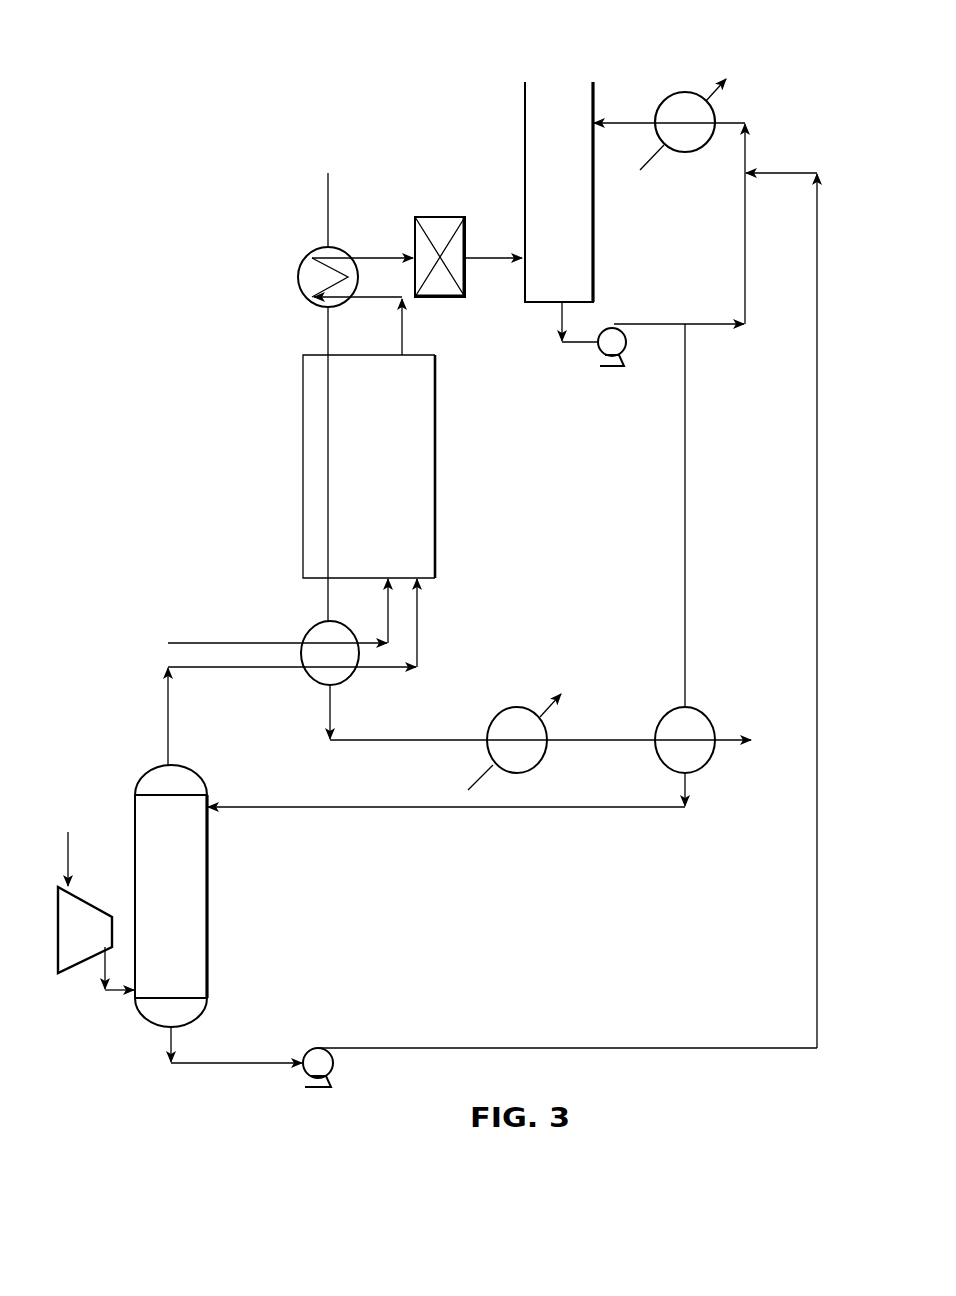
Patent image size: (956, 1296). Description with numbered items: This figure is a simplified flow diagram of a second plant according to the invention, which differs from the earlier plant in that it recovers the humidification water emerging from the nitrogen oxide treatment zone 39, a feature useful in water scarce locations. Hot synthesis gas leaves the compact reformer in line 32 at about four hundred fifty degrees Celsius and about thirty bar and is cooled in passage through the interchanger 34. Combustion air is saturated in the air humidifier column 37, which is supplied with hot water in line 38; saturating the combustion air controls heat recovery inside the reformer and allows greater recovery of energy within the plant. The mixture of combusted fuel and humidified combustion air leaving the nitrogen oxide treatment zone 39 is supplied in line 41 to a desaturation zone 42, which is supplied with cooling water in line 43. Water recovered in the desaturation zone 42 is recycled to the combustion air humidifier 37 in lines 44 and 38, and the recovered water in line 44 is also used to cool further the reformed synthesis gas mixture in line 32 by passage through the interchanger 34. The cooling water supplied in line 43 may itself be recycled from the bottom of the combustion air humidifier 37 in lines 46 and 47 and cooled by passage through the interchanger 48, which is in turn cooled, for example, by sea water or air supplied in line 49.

The line 32 is at (330, 710).
The interchanger 34 is at (663, 716).
The air humidifier column 37 is at (210, 905).
The line 38 is at (433, 807).
The nitrogen oxide treatment zone 39 is at (437, 217).
The line 41 is at (485, 260).
The desaturation zone 42 is at (524, 135).
The line 43 is at (630, 113).
The line 44 is at (685, 488).
The line 46 is at (508, 1048).
The line 47 is at (817, 432).
The interchanger 48 is at (688, 92).
The line 49 is at (726, 96).